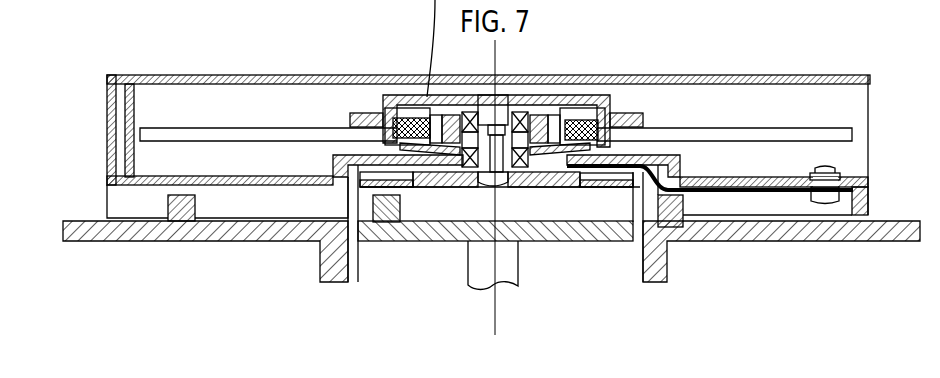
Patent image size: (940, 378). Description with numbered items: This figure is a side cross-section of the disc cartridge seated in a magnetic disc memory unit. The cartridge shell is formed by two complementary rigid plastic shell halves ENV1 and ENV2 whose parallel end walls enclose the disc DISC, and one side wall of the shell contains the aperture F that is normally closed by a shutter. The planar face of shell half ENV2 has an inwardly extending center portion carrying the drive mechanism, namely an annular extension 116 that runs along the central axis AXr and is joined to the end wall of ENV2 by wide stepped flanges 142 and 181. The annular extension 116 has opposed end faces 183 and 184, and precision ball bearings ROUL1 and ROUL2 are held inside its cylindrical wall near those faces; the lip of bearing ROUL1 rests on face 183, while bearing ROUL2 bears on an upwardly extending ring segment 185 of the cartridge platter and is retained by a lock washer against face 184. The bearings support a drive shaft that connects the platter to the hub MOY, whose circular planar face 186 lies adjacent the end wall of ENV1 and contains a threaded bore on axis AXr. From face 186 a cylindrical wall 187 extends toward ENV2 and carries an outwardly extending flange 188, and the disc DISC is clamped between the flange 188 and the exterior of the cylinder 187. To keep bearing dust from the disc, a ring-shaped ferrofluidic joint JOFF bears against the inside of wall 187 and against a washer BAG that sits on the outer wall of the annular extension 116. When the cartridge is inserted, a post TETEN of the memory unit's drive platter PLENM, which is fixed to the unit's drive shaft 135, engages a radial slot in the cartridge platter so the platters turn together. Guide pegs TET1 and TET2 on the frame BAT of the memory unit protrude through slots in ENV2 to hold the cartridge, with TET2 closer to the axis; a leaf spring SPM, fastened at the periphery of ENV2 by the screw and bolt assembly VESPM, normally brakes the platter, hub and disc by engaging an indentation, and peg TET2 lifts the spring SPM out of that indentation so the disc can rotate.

The outwardly extending flange 188 is at (378, 148).
The cylindrical wall 187 is at (378, 122).
The annular extension 116 is at (447, 115).
The end face 183 is at (553, 117).
The circular planar face 186 is at (633, 117).
The stepped flange 142 is at (540, 164).
The ring segment 185 is at (350, 118).
The stepped flange 181 is at (342, 158).
The drive shaft 135 is at (468, 272).
The end face 184 is at (594, 182).
The shell half ENV1 is at (208, 77).
The shell half ENV2 is at (283, 194).
The hub MOY is at (353, 112).
The ferrofluidic joint JOFF is at (412, 116).
The central axis AXr is at (495, 70).
The bearing ROUL1 is at (513, 105).
The bearing ROUL2 is at (545, 196).
The washer BAG is at (567, 113).
The aperture F is at (870, 137).
The disc DISC is at (232, 130).
The guide peg TET1 is at (186, 197).
The guide peg TET2 is at (680, 202).
The post TETEN is at (396, 200).
The frame BAT is at (347, 258).
The drive platter PLENM is at (552, 240).
The leaf spring SPM is at (780, 195).
The screw and bolt assembly VESPM is at (827, 203).